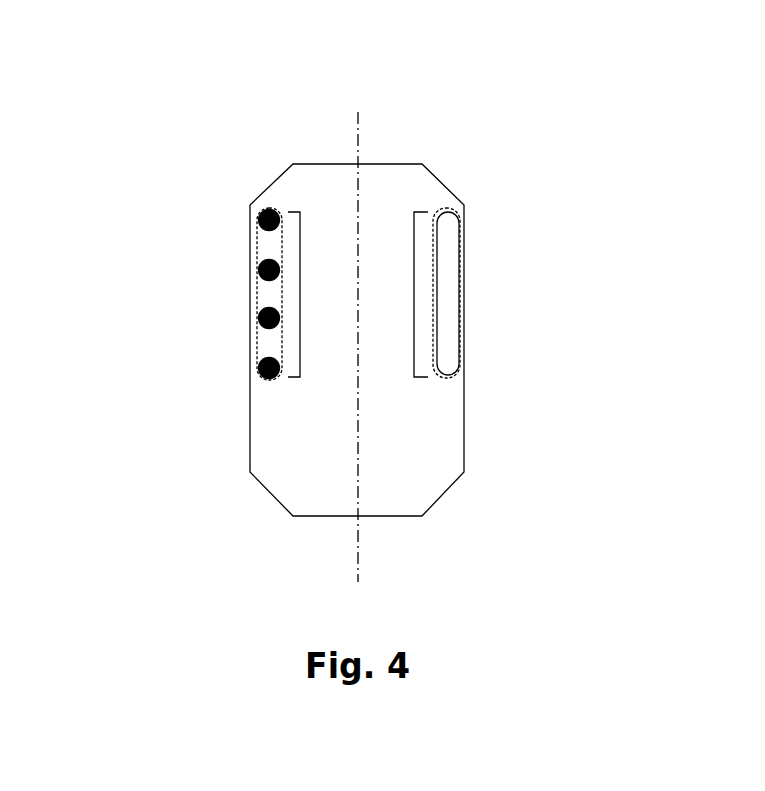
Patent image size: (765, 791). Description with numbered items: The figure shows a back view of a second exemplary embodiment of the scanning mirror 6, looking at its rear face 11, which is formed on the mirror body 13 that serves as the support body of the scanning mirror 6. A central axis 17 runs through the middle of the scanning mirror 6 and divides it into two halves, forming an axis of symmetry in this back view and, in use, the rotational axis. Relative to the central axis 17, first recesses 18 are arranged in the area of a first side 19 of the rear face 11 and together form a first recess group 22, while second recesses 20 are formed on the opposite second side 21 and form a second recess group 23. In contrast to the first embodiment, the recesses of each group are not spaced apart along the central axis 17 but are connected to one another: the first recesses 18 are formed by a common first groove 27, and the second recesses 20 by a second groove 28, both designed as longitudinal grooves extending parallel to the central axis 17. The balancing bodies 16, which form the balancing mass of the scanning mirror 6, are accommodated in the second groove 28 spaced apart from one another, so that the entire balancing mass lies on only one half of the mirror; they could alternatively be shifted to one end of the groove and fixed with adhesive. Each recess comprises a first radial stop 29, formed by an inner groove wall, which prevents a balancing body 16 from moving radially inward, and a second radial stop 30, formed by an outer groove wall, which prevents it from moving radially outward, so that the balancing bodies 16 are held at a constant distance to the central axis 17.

The scanning mirror 6 is at (156, 110).
The rear face 11 is at (413, 462).
The mirror body 13 is at (297, 473).
The balancing bodies 16 is at (250, 207).
The central axis 17 is at (357, 552).
The first recesses 18 is at (448, 215).
The first side 19 is at (443, 442).
The second recesses 20 is at (259, 215).
The second side 21 is at (273, 435).
The first recess group 22 is at (413, 295).
The second recess group 23 is at (302, 295).
The first groove 27 is at (455, 247).
The second groove 28 is at (262, 348).
The first radial stop 29 is at (283, 270).
The second radial stop 30 is at (260, 267).